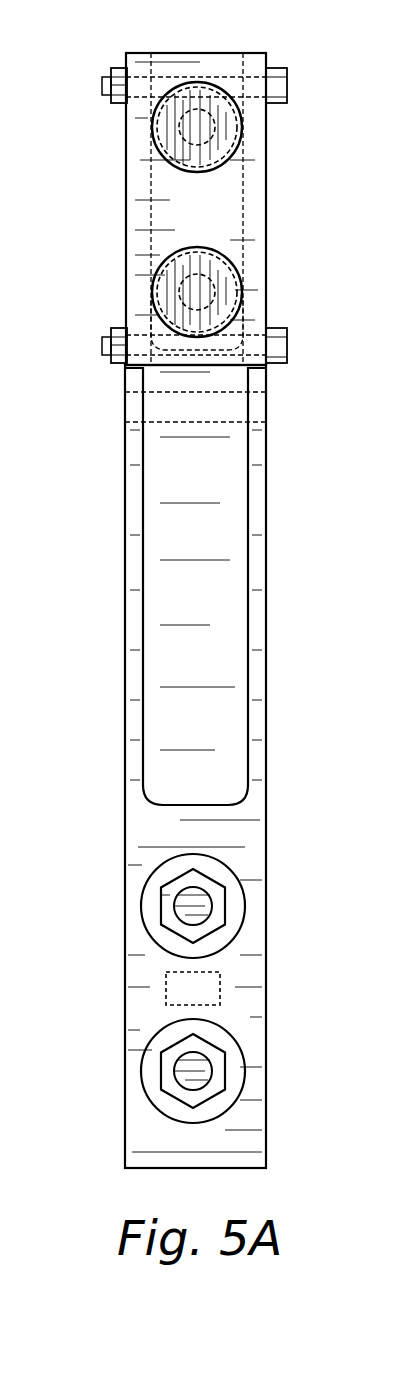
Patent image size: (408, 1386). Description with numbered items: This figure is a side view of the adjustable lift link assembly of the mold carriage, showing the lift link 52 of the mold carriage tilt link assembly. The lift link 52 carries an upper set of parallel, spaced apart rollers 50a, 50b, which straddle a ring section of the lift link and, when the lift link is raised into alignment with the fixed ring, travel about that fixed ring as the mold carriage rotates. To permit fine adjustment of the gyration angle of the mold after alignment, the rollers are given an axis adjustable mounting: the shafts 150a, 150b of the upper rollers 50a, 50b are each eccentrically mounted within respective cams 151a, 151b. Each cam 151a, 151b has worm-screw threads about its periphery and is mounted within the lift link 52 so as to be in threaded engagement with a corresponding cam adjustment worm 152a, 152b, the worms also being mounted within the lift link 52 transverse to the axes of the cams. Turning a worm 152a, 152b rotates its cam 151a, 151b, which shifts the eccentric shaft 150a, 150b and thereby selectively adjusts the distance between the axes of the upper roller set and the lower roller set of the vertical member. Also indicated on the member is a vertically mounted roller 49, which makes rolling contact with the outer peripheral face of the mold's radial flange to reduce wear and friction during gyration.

The lift link 52 is at (270, 495).
The vertically mounted roller 49 is at (208, 978).
The upper roller 50a is at (203, 175).
The upper roller 50b is at (188, 234).
The shaft 150a is at (200, 125).
The shaft 150b is at (225, 255).
The cam 151a is at (200, 88).
The cam 151b is at (207, 288).
The cam adjustment worm 152a is at (103, 77).
The cam adjustment worm 152b is at (117, 330).